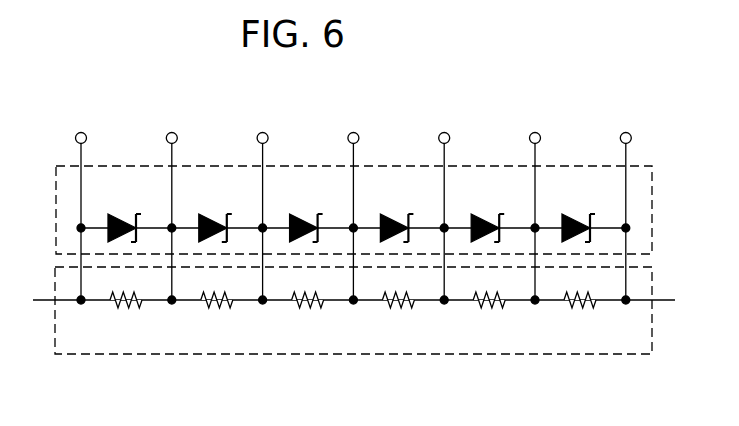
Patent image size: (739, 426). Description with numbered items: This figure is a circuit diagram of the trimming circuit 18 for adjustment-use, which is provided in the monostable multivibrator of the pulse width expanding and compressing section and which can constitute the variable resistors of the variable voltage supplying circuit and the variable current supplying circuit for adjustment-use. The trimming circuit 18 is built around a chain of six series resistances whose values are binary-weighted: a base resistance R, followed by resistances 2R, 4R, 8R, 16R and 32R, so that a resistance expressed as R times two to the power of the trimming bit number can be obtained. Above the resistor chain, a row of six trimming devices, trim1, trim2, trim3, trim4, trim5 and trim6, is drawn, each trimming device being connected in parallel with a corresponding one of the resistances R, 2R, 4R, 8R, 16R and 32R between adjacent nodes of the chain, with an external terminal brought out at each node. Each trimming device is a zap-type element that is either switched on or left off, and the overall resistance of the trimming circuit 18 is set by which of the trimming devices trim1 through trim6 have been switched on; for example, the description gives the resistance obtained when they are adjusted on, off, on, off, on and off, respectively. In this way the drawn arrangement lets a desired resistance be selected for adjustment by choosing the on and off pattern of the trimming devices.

The trimming circuit for adjustment-use 18 is at (585, 110).
The trimming device trim1 is at (126, 209).
The trimming device trim2 is at (217, 209).
The trimming device trim3 is at (308, 209).
The trimming device trim4 is at (398, 209).
The trimming device trim5 is at (489, 209).
The trimming device trim6 is at (580, 209).
The resistance R is at (126, 318).
The resistance 2R is at (217, 318).
The resistance 4R is at (308, 318).
The resistance 8R is at (398, 318).
The resistance 16R is at (489, 318).
The resistance 32R is at (579, 318).